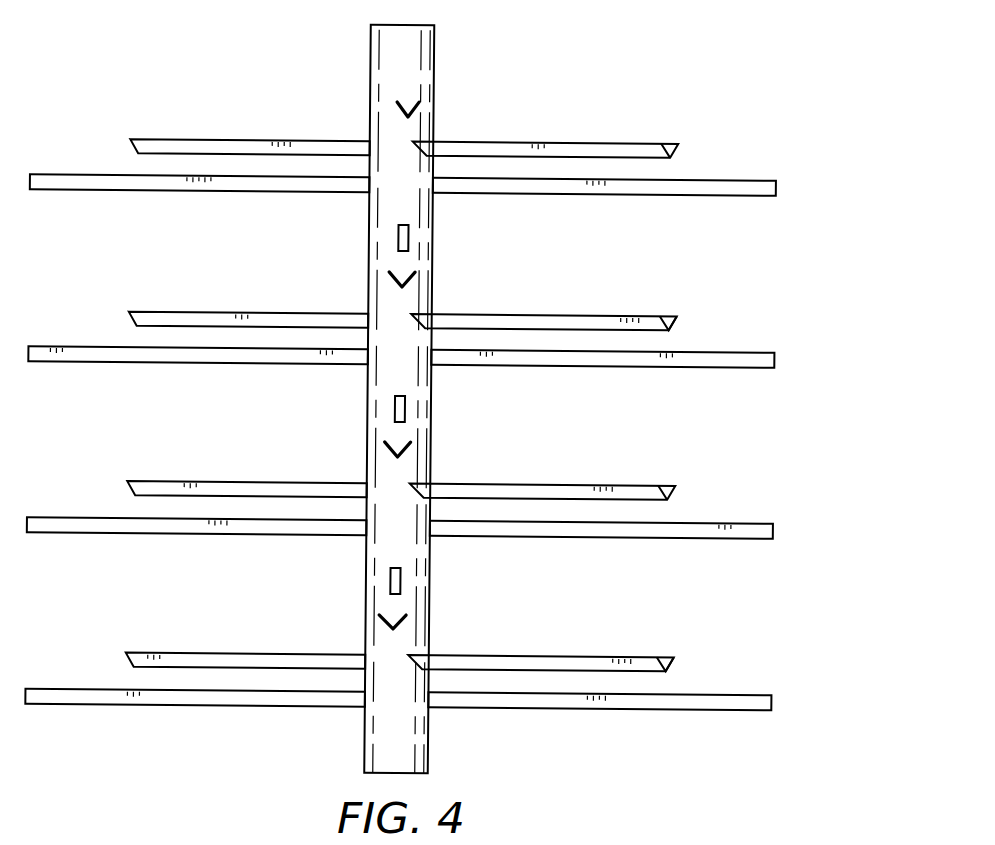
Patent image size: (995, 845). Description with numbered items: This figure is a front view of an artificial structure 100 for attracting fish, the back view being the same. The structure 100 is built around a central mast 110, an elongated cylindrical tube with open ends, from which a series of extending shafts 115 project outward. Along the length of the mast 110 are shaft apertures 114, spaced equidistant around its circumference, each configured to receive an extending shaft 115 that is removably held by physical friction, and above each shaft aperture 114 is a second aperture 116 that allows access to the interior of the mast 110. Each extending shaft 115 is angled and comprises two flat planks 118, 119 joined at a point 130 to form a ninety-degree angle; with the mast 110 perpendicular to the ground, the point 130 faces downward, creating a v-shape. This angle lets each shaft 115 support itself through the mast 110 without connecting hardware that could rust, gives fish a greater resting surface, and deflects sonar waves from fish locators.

The artificial structure 100 is at (532, 73).
The central mast 110 is at (368, 384).
The shaft aperture 114 is at (405, 453).
The extending shaft 115 is at (249, 311).
The second aperture 116 is at (406, 410).
The flat plank 118 is at (662, 654).
The flat plank 119 is at (678, 697).
The point 130 is at (669, 326).